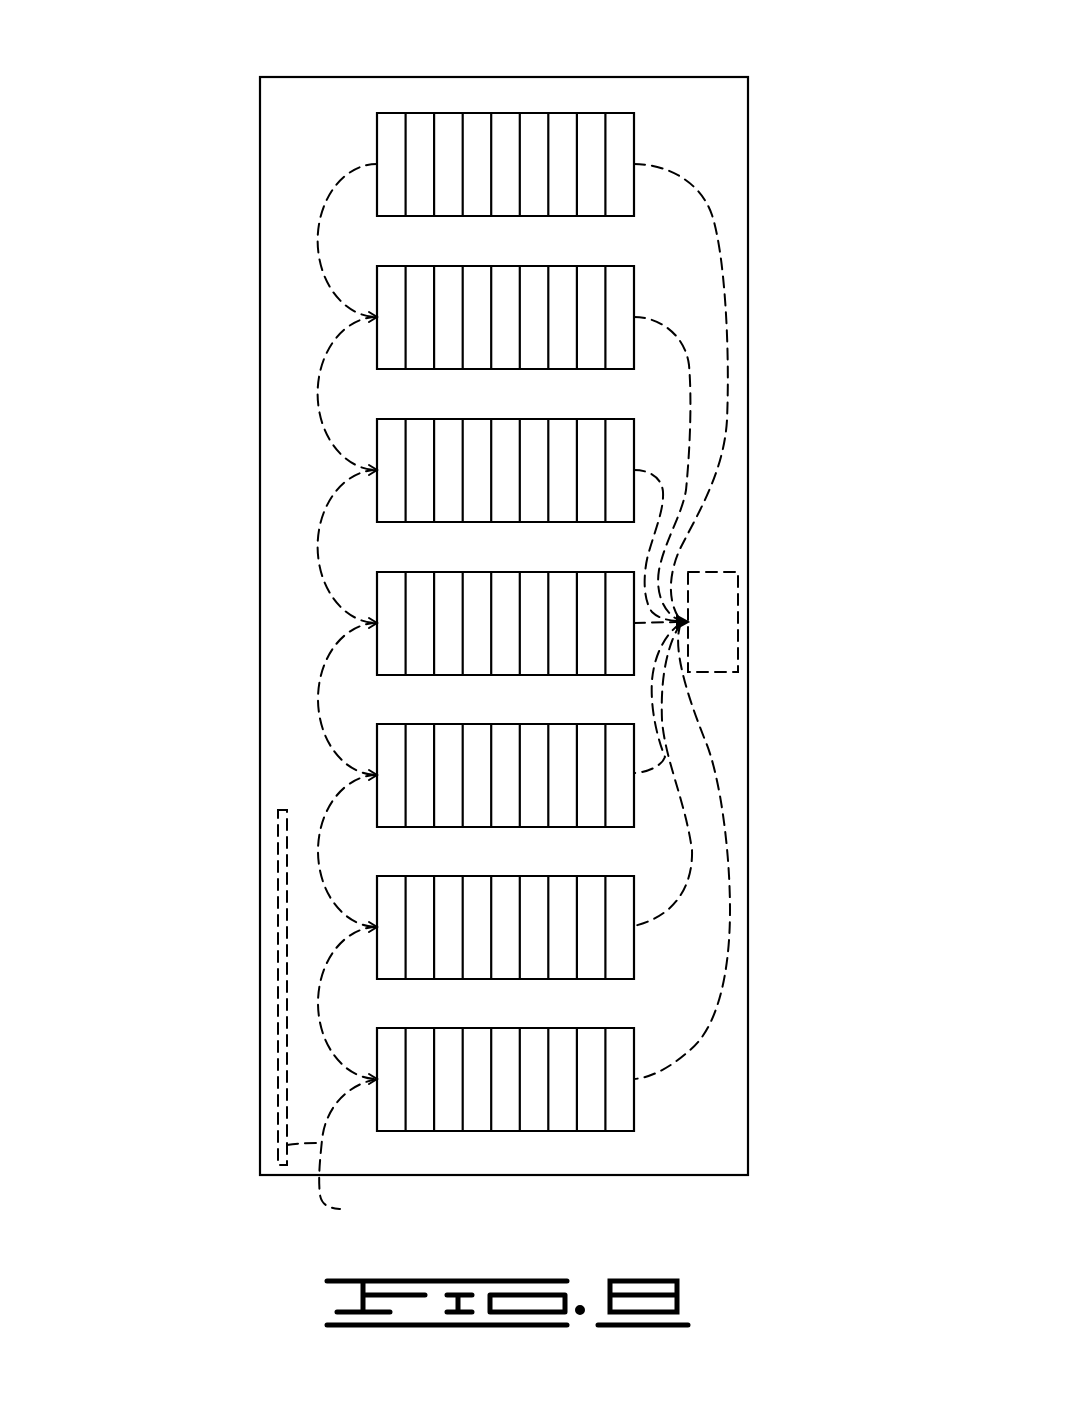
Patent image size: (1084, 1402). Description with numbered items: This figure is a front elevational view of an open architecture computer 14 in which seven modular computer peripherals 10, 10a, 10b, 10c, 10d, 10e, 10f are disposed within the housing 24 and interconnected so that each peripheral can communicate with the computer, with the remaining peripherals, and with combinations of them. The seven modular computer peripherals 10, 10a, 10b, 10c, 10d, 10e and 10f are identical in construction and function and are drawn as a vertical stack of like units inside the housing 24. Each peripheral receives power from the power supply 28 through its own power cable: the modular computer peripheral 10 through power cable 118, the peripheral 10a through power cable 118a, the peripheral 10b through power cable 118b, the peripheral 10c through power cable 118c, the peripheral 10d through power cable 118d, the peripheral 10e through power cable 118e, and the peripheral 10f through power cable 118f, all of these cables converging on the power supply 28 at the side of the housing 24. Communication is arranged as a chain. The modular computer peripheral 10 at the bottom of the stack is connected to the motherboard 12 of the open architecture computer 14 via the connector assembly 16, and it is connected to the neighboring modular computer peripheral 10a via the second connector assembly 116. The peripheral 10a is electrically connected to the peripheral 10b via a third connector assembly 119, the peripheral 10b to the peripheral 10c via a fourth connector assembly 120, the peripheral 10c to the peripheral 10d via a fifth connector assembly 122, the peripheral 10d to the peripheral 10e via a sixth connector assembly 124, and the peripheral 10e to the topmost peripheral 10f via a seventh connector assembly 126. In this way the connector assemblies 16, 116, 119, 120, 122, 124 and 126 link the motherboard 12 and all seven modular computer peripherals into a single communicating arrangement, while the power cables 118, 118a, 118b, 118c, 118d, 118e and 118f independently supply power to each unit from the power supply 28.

The modular computer peripheral 10 is at (596, 1131).
The modular computer peripheral 10a is at (634, 952).
The modular computer peripheral 10b is at (376, 743).
The modular computer peripheral 10c is at (376, 598).
The modular computer peripheral 10d is at (376, 440).
The modular computer peripheral 10e is at (376, 280).
The modular computer peripheral 10f is at (376, 127).
The motherboard 12 is at (285, 942).
The open architecture computer 14 is at (672, 78).
The connector assembly 16 is at (351, 1153).
The housing 24 is at (378, 77).
The power supply 28 is at (738, 604).
The second connector assembly 116 is at (323, 1010).
The power cable 118 is at (735, 1050).
The power cable 118a is at (690, 882).
The power cable 118b is at (660, 762).
The power cable 118c is at (642, 572).
The power cable 118d is at (663, 520).
The power cable 118e is at (690, 358).
The power cable 118f is at (702, 207).
The third connector assembly 119 is at (330, 800).
The fourth connector assembly 120 is at (318, 697).
The fifth connector assembly 122 is at (318, 545).
The sixth connector assembly 124 is at (318, 392).
The seventh connector assembly 126 is at (318, 240).